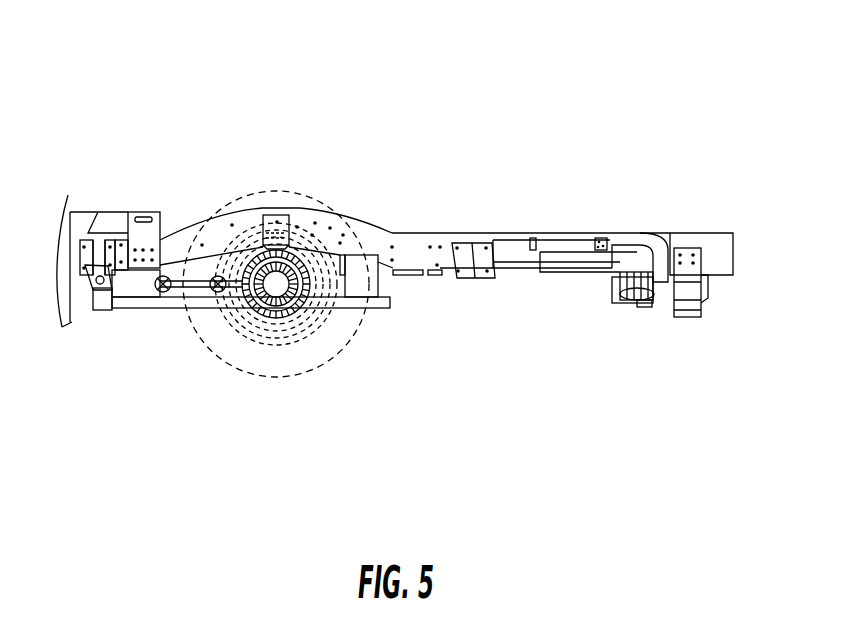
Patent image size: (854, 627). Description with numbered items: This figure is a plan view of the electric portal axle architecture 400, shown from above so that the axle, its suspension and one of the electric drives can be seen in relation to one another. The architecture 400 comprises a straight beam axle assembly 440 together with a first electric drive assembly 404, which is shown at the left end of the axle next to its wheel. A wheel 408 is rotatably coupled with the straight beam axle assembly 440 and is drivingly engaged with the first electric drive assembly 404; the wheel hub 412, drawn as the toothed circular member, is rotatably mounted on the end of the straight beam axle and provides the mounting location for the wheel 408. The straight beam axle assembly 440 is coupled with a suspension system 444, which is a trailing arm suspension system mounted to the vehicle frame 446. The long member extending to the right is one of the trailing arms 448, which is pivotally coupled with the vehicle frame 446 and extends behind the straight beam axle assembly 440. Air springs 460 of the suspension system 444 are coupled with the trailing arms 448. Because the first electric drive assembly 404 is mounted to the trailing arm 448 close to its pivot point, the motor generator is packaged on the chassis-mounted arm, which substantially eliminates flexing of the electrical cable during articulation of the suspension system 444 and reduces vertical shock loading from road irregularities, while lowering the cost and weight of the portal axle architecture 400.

The portal axle architecture 400 is at (395, 178).
The first electric drive assembly 404 is at (133, 290).
The wheels 408 is at (300, 363).
The wheel hubs 412 is at (258, 318).
The straight beam axle assembly 440 is at (318, 187).
The suspension system 444 is at (397, 322).
The vehicle frame 446 is at (424, 238).
The trailing arms 448 is at (215, 300).
The air springs 460 is at (365, 262).